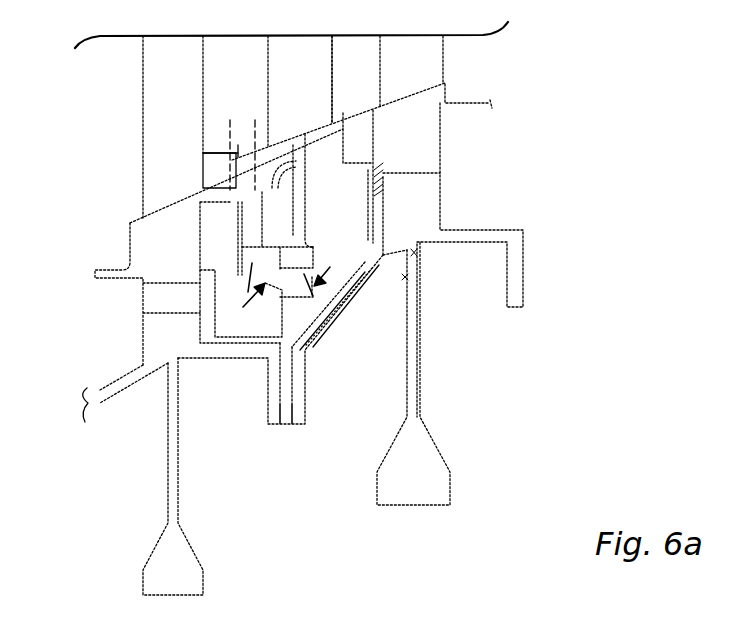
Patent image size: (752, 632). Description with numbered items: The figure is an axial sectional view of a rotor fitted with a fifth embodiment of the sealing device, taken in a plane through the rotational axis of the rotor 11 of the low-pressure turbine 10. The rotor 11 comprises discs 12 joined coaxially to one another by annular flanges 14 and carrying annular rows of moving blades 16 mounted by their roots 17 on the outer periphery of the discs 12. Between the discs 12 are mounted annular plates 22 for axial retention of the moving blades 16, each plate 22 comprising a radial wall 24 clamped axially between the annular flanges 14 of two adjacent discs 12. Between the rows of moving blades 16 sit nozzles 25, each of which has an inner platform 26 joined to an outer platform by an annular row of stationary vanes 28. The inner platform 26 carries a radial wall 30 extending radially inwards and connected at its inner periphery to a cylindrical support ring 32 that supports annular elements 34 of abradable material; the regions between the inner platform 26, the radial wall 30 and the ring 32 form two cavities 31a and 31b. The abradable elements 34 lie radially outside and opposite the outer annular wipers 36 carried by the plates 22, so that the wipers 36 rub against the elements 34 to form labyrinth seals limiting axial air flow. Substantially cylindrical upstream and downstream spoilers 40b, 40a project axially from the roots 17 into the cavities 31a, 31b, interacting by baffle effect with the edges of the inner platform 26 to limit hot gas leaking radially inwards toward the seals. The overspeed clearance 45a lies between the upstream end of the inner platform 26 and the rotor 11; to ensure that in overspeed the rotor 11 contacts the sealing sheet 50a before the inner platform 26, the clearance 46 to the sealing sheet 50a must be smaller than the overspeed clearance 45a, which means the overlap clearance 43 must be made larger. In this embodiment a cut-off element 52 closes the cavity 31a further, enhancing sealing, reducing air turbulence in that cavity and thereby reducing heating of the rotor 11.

The low-pressure turbine 10 is at (310, 521).
The rotor 11 is at (182, 264).
The discs 12 is at (185, 578).
The annular flanges 14 is at (268, 404).
The moving blades 16 is at (153, 122).
The roots 17 is at (150, 242).
The annular plates 22 is at (347, 268).
The radial wall 24 is at (287, 415).
The nozzles 25 is at (316, 74).
The inner platform 26 is at (318, 128).
The stationary vanes 28 is at (318, 45).
The radial wall 30 is at (298, 213).
The cavity 31a is at (290, 219).
The cavity 31b is at (348, 190).
The cylindrical support ring 32 is at (295, 238).
The annular elements 34 is at (333, 230).
The outer annular wipers 36 is at (283, 287).
The downstream spoiler 40a is at (235, 207).
The upstream spoiler 40b is at (358, 157).
The overlap clearance 43 is at (268, 118).
The overspeed clearance 45a is at (232, 152).
The clearance 46 is at (220, 168).
The sealing sheet 50a is at (283, 165).
The cut-off element 52 is at (238, 237).